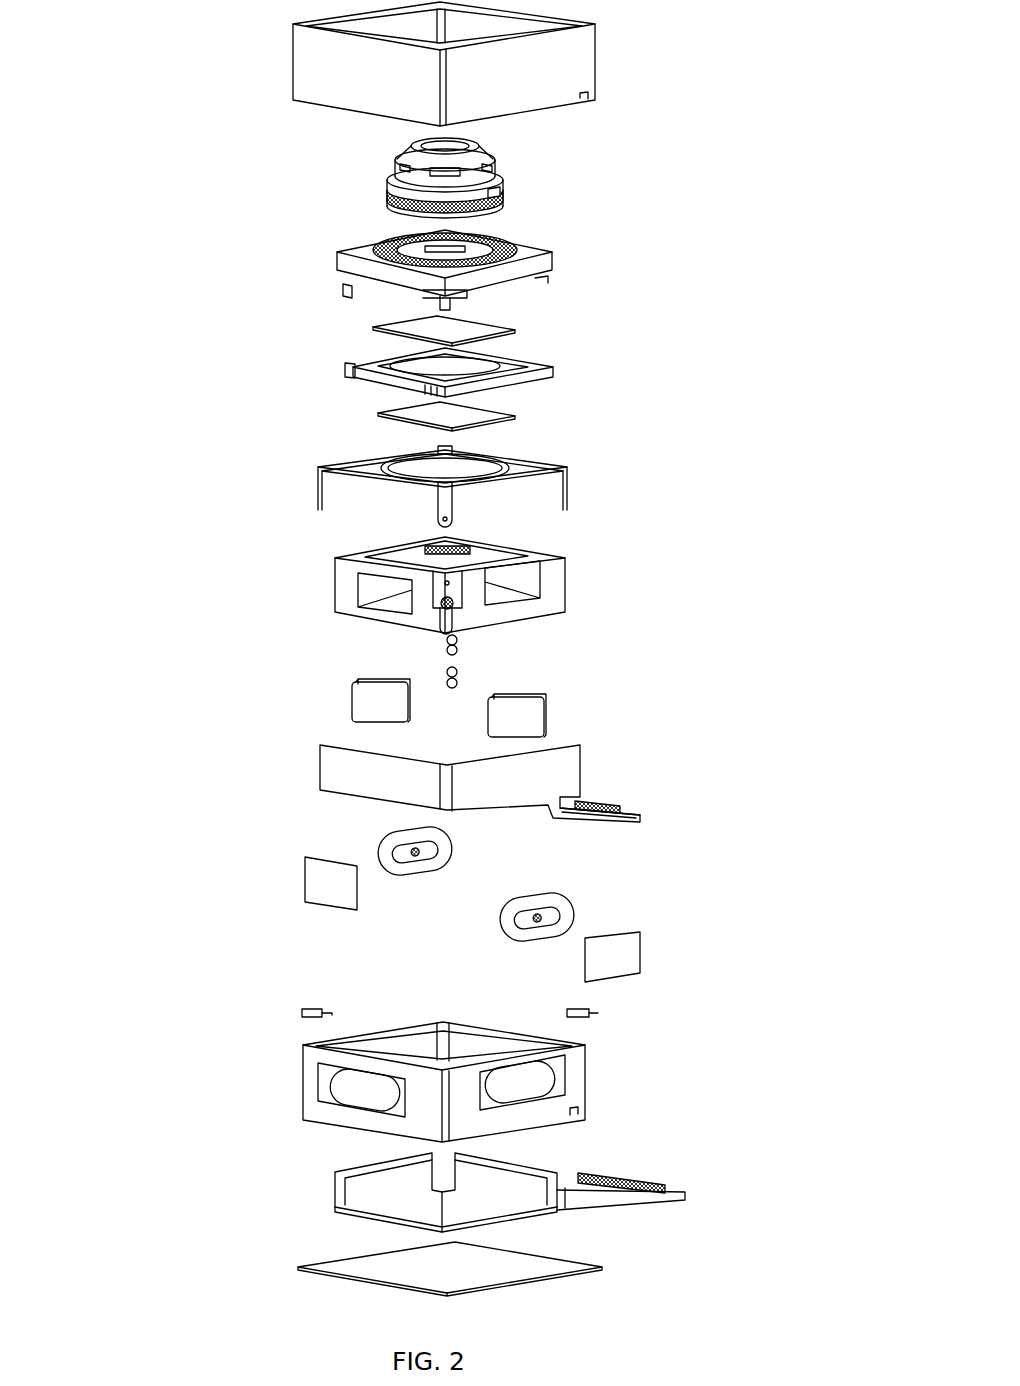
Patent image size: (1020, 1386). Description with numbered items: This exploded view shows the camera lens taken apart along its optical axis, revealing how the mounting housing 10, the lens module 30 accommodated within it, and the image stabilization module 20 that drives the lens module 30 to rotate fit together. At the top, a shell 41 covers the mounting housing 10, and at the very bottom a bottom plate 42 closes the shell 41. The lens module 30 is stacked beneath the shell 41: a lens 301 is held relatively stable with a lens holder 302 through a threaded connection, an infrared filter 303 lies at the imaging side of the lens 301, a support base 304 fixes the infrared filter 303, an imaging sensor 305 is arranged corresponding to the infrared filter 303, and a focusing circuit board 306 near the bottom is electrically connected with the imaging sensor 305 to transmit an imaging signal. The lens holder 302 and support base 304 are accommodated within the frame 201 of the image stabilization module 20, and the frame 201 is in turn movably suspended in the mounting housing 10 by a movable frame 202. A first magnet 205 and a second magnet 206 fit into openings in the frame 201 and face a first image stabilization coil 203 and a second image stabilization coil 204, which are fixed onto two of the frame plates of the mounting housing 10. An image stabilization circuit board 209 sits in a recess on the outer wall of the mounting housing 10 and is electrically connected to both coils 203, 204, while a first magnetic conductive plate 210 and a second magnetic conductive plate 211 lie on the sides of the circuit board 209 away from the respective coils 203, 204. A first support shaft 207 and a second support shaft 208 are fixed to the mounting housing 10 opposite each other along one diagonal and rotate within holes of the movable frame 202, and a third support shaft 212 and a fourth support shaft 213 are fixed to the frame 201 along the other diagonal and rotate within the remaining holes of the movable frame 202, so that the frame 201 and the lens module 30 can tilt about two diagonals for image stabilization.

The mounting housing 10 is at (576, 1086).
The image stabilization module 20 is at (730, 532).
The lens module 30 is at (218, 192).
The shell 41 is at (321, 83).
The bottom plate 42 is at (361, 1271).
The frame 201 is at (553, 595).
The movable frame 202 is at (522, 470).
The first image stabilization coil 203 is at (448, 849).
The second image stabilization coil 204 is at (573, 905).
The first magnet 205 is at (393, 703).
The second magnet 206 is at (540, 708).
The first support shaft 207 is at (330, 1013).
The second support shaft 208 is at (592, 1014).
The image stabilization circuit board 209 is at (558, 787).
The first magnetic conductive plate 210 is at (358, 887).
The second magnetic conductive plate 211 is at (616, 949).
The third support shaft 212 is at (458, 677).
The fourth support shaft 213 is at (458, 645).
The lens 301 is at (380, 180).
The lens holder 302 is at (392, 279).
The infrared filter 303 is at (422, 326).
The support base 304 is at (355, 370).
The imaging sensor 305 is at (432, 418).
The focusing circuit board 306 is at (401, 1213).